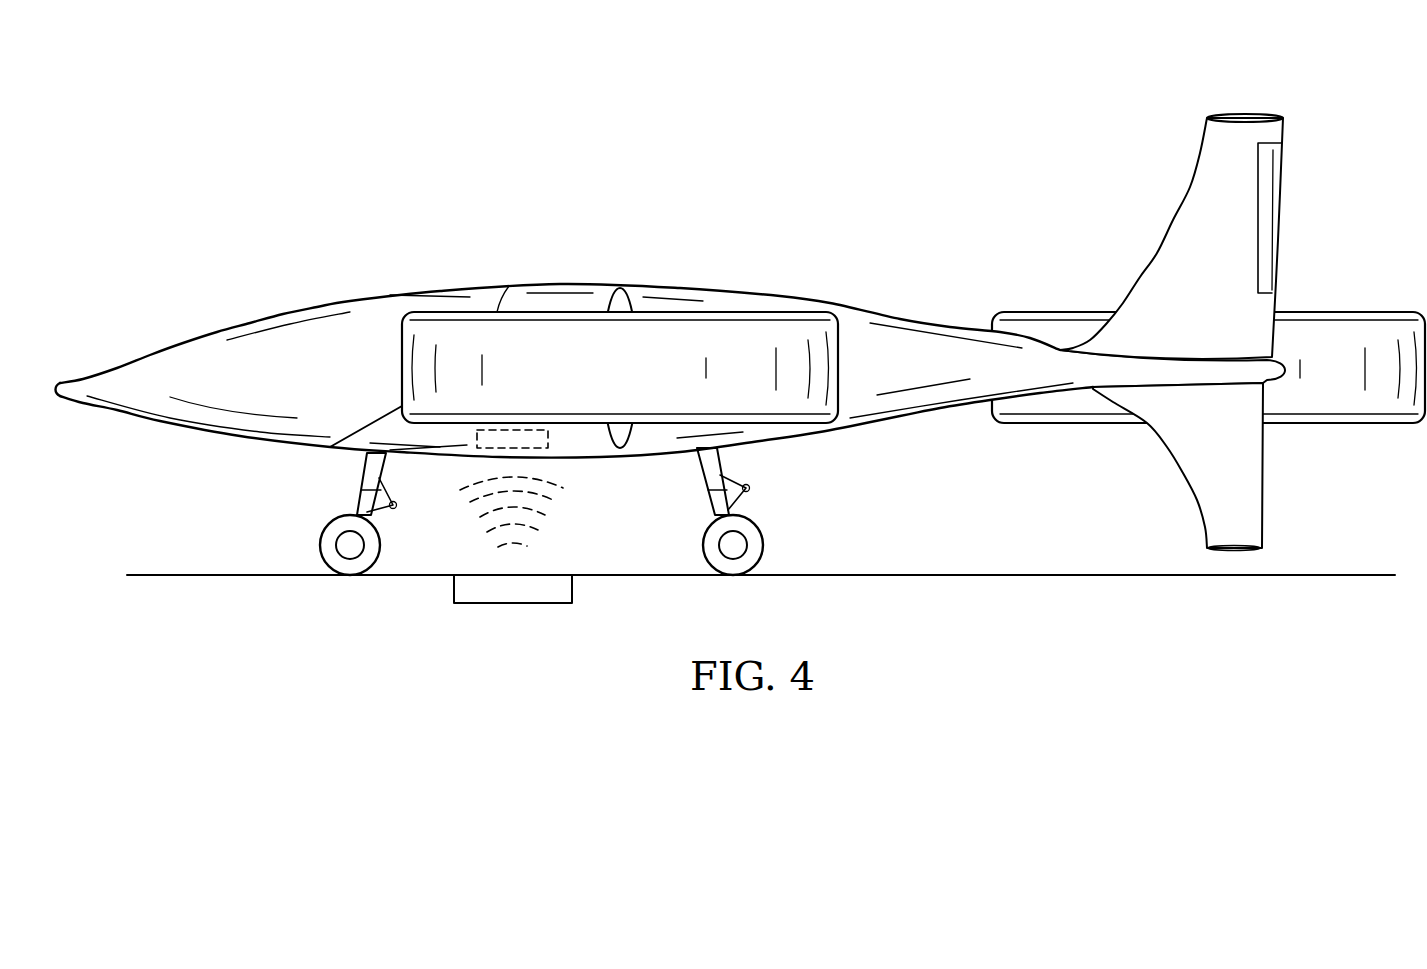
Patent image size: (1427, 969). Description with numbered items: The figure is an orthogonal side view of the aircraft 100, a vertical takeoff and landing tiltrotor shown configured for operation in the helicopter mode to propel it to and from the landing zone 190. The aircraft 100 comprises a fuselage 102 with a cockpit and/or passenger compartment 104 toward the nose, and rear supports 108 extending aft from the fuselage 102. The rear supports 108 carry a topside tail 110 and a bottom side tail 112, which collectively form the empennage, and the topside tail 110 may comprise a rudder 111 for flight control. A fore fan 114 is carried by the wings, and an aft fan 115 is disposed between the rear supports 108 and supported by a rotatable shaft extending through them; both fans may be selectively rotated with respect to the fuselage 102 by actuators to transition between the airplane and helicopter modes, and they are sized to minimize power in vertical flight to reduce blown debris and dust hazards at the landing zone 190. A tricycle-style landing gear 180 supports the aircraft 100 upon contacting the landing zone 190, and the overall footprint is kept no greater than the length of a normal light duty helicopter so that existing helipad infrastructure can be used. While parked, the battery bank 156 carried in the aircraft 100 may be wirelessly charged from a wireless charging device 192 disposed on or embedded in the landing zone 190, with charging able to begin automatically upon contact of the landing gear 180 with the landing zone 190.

The aircraft 100 is at (453, 124).
The fuselage 102 is at (780, 442).
The cockpit and/or passenger compartment 104 is at (350, 300).
The rear supports 108 is at (900, 286).
The topside tail 110 is at (1243, 112).
The rudder 111 is at (1272, 198).
The bottom side tail 112 is at (1264, 466).
The fore fan 114 is at (717, 303).
The aft fan 115 is at (1362, 303).
The battery bank 156 is at (517, 430).
The landing gear 180 is at (358, 503).
The landing zone 190 is at (935, 573).
The wireless charging device 192 is at (512, 604).